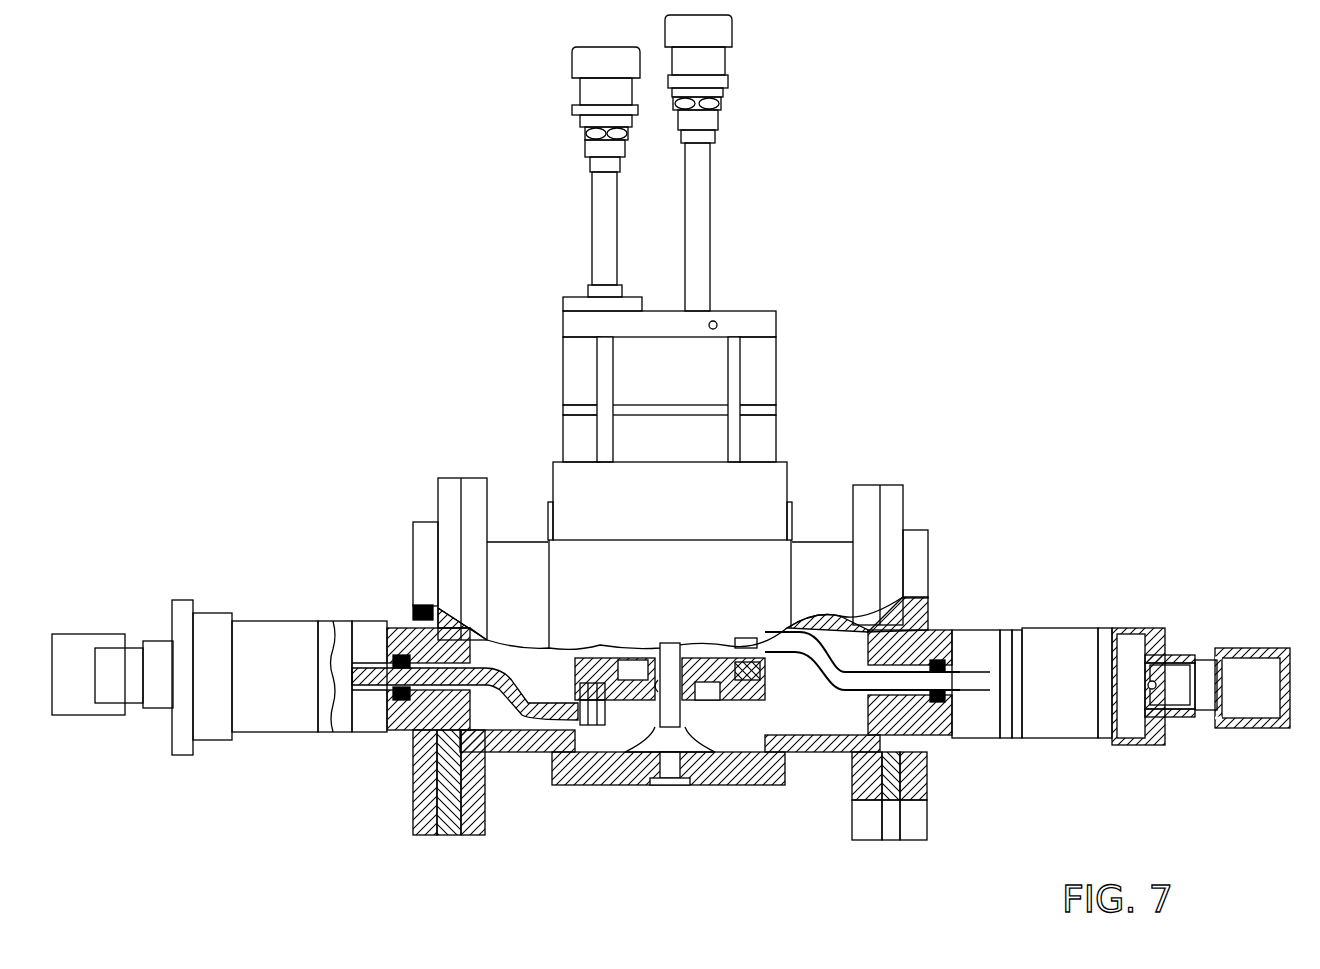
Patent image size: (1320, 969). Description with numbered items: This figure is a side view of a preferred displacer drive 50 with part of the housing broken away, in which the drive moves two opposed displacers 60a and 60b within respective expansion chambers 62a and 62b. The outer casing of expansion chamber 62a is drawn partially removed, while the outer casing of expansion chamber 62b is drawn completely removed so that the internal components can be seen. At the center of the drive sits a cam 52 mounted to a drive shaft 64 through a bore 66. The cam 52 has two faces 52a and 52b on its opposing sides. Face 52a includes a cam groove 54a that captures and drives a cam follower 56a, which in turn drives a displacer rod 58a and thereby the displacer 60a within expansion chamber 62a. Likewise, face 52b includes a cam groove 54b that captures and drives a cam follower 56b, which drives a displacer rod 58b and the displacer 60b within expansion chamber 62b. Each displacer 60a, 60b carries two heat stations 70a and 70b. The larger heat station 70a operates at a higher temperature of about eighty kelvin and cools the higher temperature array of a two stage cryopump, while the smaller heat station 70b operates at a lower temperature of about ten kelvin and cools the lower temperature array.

The displacer drive 50 is at (796, 840).
The cam 52 is at (778, 700).
The face 52a is at (605, 740).
The face 52b is at (710, 660).
The cam groove 54a is at (700, 700).
The cam groove 54b is at (623, 670).
The cam follower 56a is at (578, 697).
The cam follower 56b is at (765, 655).
The displacer rod 58a is at (497, 670).
The displacer rod 58b is at (838, 640).
The displacer 60a is at (348, 640).
The displacer 60b is at (995, 650).
The expansion chamber 62a is at (330, 628).
The expansion chamber 62b is at (1117, 628).
The drive shaft 64 is at (638, 740).
The bore 66 is at (688, 745).
The heat station 70a is at (273, 720).
The heat station 70b is at (83, 700).